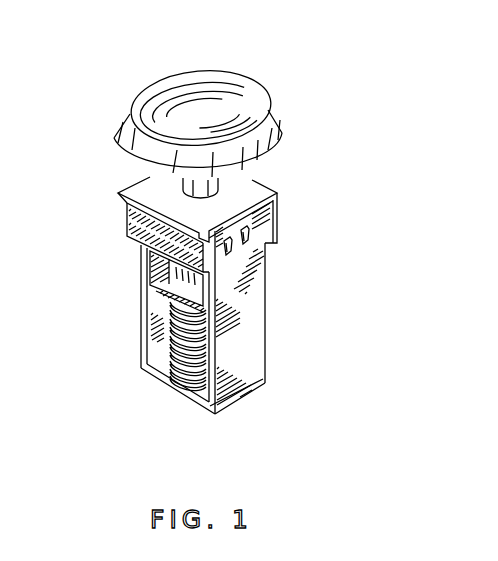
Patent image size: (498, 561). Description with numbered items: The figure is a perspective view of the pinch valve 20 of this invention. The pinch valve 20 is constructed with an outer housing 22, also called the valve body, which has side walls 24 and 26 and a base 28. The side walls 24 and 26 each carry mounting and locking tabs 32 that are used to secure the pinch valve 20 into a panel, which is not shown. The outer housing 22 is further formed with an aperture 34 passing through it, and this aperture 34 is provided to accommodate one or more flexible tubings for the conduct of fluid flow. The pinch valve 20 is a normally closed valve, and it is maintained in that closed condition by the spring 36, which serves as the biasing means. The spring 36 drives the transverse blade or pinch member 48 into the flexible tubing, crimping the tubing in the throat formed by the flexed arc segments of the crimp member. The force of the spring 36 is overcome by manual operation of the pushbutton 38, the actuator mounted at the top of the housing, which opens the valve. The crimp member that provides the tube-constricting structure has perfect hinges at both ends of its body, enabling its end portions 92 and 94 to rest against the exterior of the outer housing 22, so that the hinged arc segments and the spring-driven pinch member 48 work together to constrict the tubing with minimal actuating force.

The pinch valve 20 is at (306, 172).
The outer housing 22 is at (243, 350).
The side wall 24 is at (256, 385).
The side wall 26 is at (141, 358).
The base 28 is at (197, 410).
The mounting and locking tabs 32 is at (228, 255).
The aperture 34 is at (157, 277).
The spring 36 is at (165, 385).
The pushbutton 38 is at (252, 92).
The pinch member 48 is at (176, 268).
The end portion 92 is at (127, 232).
The end portion 94 is at (277, 245).